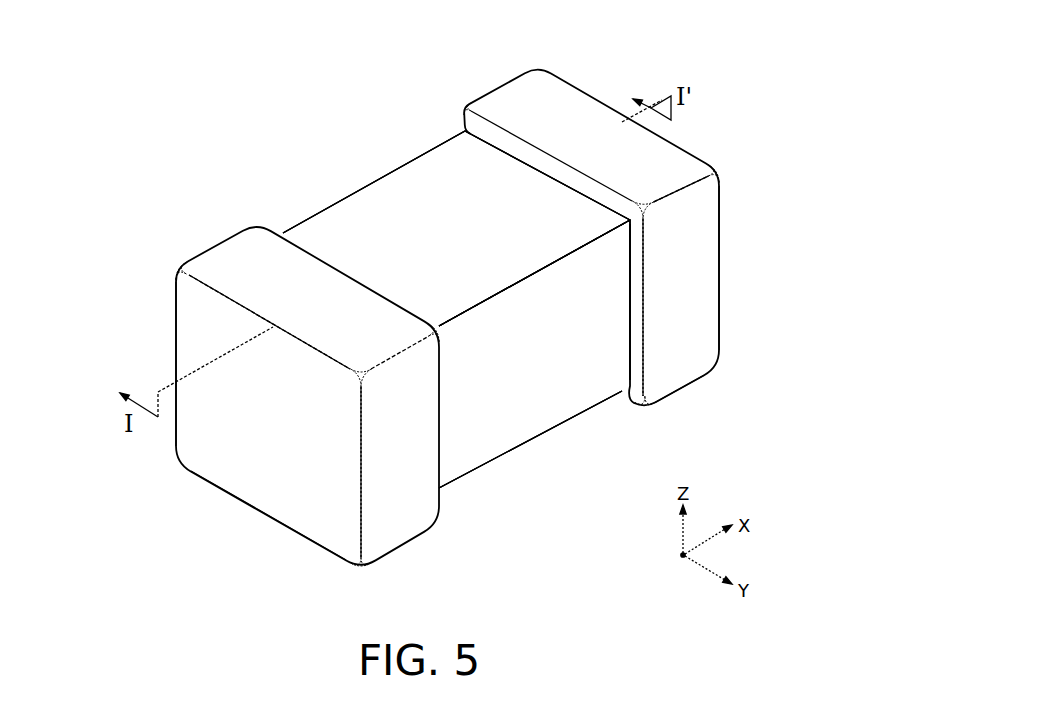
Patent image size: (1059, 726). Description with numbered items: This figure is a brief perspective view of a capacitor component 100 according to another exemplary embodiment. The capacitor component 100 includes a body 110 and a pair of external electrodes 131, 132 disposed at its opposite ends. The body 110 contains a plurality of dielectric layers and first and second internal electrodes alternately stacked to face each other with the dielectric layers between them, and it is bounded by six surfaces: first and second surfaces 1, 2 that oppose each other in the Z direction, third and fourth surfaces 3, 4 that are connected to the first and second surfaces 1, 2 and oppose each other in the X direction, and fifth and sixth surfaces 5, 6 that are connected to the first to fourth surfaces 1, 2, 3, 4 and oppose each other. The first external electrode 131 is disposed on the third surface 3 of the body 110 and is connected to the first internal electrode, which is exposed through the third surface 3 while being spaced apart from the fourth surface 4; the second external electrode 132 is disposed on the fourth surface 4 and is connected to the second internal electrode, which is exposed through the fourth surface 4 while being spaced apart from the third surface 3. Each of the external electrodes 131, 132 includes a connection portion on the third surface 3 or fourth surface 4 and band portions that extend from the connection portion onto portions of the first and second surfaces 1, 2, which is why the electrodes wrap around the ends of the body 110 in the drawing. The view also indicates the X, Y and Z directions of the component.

The capacitor component 100 is at (236, 78).
The body 110 is at (342, 230).
The first external electrode 131 is at (238, 263).
The second external electrode 132 is at (512, 104).
The first surface 1 is at (492, 406).
The second surface 2 is at (465, 192).
The third surface 3 is at (277, 457).
The fourth surface 4 is at (665, 250).
The fifth surface 5 is at (552, 378).
The sixth surface 6 is at (405, 214).